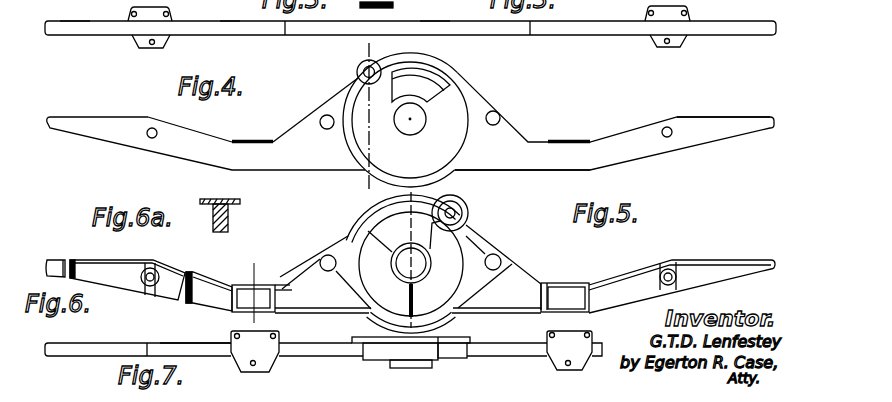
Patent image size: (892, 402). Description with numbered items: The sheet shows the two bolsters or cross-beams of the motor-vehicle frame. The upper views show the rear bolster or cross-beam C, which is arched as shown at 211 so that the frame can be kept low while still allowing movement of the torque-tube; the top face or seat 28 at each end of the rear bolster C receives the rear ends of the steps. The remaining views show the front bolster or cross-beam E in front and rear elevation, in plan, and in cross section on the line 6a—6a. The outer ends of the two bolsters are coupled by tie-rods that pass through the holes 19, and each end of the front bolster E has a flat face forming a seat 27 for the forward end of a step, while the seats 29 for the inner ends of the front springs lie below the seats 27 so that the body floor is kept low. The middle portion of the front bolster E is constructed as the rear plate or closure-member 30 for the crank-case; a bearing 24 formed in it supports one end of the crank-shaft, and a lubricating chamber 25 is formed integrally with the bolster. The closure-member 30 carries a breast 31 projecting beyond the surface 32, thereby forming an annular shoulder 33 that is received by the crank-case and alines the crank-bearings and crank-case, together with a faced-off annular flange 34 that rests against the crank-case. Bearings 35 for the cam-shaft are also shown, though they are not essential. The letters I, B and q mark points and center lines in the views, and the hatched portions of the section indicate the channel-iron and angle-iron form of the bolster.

In FIG. 4, the holes 19 is at (667, 127).
In FIG. 5, the holes 19 is at (668, 268).
In FIG. 4, the bearing 24 is at (410, 128).
In FIG. 5, the bearing 24 is at (428, 268).
In FIG. 4, the lubricating chamber 25 is at (430, 92).
In FIG. 5, the lubricating chamber 25 is at (387, 236).
In FIG. 4, the seat 27 is at (730, 117).
In FIG. 5, the seat 27 is at (682, 286).
In FIG. 6, the seat 27 is at (100, 260).
In FIG. 7, the seat 27 is at (93, 343).
In FIG. 3, the top face or seat 28 is at (78, 14).
In FIG. 4, the seats for the inner ends of the front springs 29 is at (253, 140).
In FIG. 5, the seats for the inner ends of the front springs 29 is at (561, 283).
In FIG. 6A, the seats for the inner ends of the front springs 29 is at (238, 199).
In FIG. 7, the seats for the inner ends of the front springs 29 is at (411, 351).
In FIG. 4, the rear plate or closure-member 30 is at (333, 170).
In FIG. 5, the rear plate or closure-member 30 is at (345, 238).
In FIG. 4, the breast 31 is at (468, 131).
In FIG. 7, the breast 31 is at (356, 337).
In FIG. 4, the surface 32 is at (478, 172).
In FIG. 5, the surface 32 is at (408, 299).
In FIG. 4, the annular shoulder 33 is at (353, 128).
In FIG. 5, the annular shoulder 33 is at (404, 264).
In FIG. 4, the annular flange 34 is at (411, 178).
In FIG. 5, the annular flange 34 is at (465, 305).
In FIG. 7, the annular flange 34 is at (364, 355).
In FIG. 4, the bearings for the cam-shaft 35 is at (357, 66).
In FIG. 5, the bearings for the cam-shaft 35 is at (468, 213).
In FIG. 3, the arch of the rear bolster 211 is at (433, 21).
In FIG. 6, the section line 6a— 6a is at (262, 288).
In FIG. 4, the front bolster or cross-beam E is at (328, 104).
In FIG. 5, the front bolster or cross-beam E is at (298, 281).
In FIG. 6, the front bolster or cross-beam E is at (164, 303).
In FIG. 6A, the front bolster or cross-beam E is at (229, 215).
In FIG. 7, the front bolster or cross-beam E is at (185, 343).
In FIG. 4, the hole I is at (498, 113).
In FIG. 5, the hole I is at (500, 258).
In FIG. 4, the point B is at (410, 190).
In FIG. 5, the point B is at (430, 333).
In FIG. 3, the rear bolster or cross-beam C is at (232, 17).
In FIG. 4, the center line q is at (370, 47).